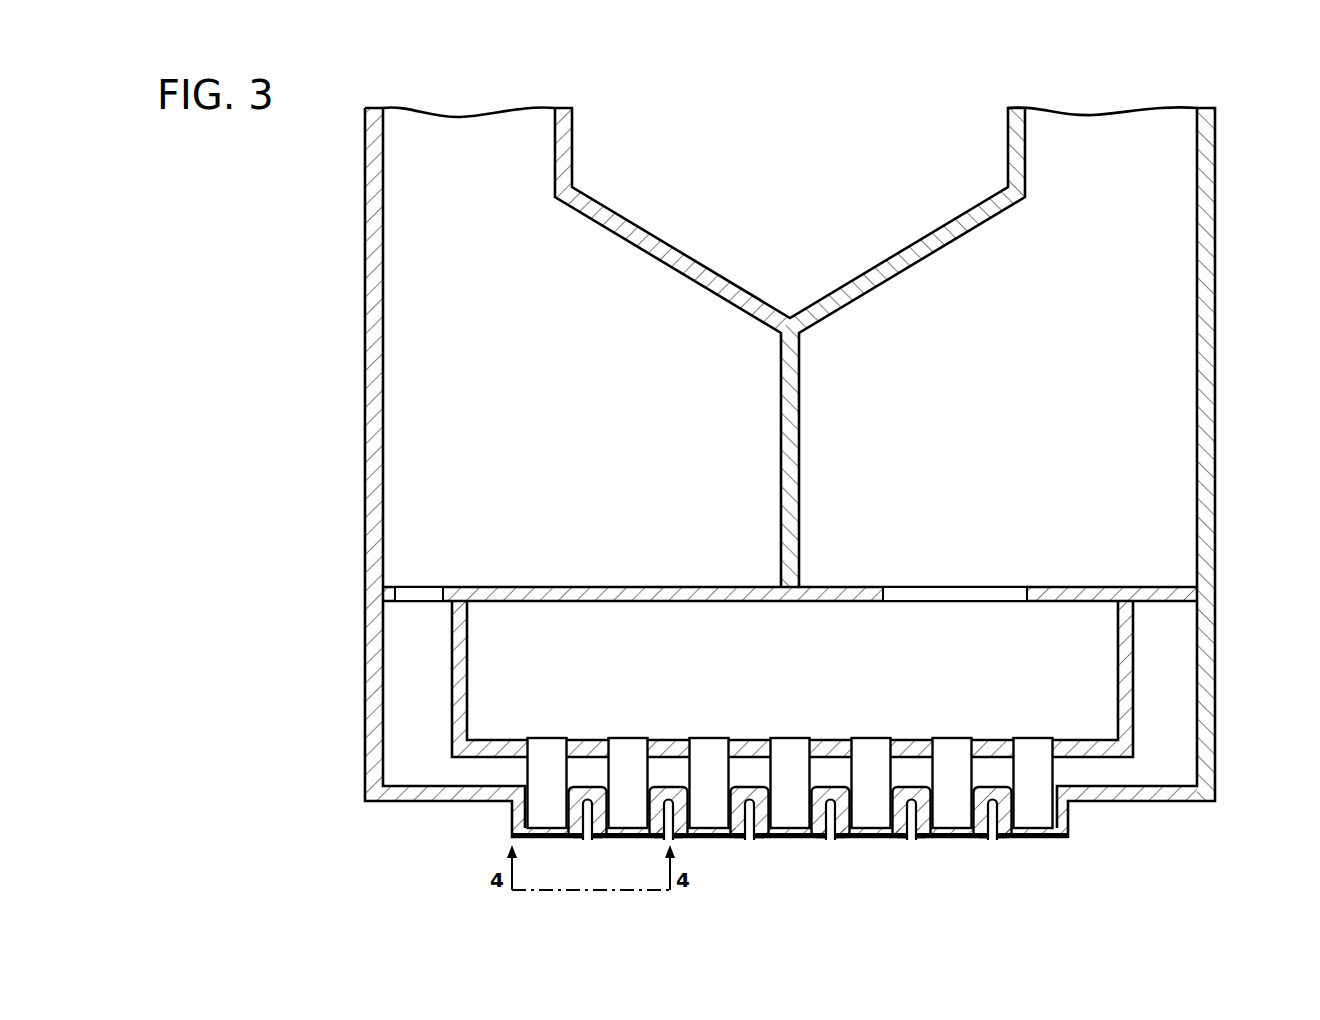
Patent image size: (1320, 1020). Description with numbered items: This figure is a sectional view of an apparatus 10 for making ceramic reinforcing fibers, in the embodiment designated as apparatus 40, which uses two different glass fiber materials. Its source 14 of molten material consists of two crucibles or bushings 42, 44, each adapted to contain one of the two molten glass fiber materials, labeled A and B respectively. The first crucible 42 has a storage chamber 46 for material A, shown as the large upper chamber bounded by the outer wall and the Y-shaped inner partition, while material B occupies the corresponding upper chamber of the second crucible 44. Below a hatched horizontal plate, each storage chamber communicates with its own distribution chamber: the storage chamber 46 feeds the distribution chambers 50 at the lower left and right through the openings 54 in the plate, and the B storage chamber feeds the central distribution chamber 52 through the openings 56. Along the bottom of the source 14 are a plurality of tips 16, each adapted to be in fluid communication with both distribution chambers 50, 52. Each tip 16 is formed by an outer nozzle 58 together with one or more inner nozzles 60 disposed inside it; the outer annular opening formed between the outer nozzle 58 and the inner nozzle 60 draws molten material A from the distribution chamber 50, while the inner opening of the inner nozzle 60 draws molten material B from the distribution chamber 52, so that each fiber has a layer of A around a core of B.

The apparatus 10 is at (777, 456).
The source 14 is at (777, 488).
The tips 16 is at (1078, 826).
The apparatus 40 is at (518, 454).
The crucible 42 is at (365, 222).
The crucible 44 is at (1217, 124).
The storage chamber 46 is at (405, 371).
The distribution chamber 50 is at (392, 625).
The distribution chamber 52 is at (1085, 723).
The openings 54 is at (425, 594).
The openings 56 is at (984, 594).
The outer nozzle 58 is at (788, 835).
The inner nozzle 60 is at (798, 828).